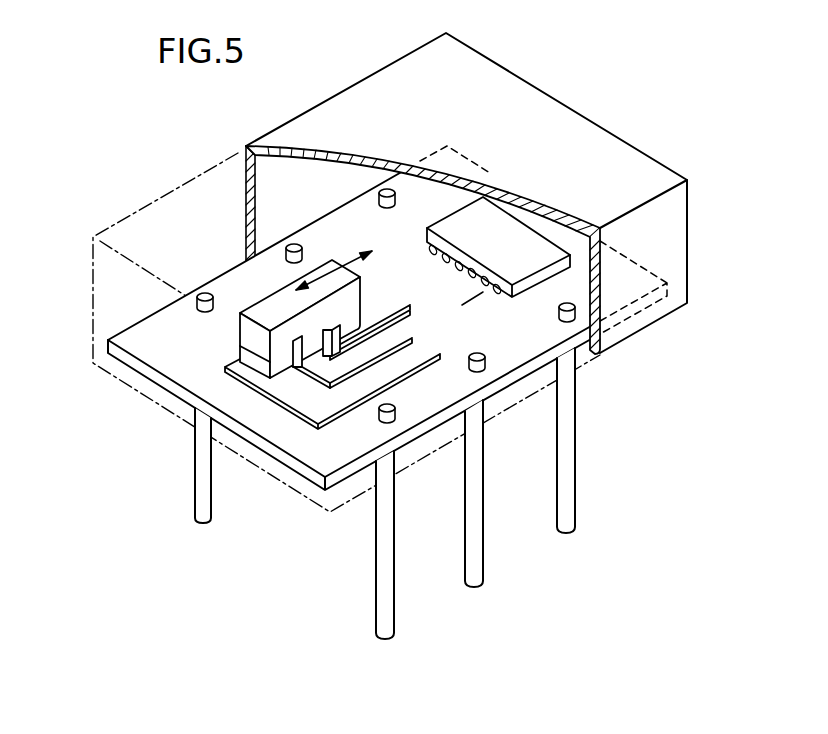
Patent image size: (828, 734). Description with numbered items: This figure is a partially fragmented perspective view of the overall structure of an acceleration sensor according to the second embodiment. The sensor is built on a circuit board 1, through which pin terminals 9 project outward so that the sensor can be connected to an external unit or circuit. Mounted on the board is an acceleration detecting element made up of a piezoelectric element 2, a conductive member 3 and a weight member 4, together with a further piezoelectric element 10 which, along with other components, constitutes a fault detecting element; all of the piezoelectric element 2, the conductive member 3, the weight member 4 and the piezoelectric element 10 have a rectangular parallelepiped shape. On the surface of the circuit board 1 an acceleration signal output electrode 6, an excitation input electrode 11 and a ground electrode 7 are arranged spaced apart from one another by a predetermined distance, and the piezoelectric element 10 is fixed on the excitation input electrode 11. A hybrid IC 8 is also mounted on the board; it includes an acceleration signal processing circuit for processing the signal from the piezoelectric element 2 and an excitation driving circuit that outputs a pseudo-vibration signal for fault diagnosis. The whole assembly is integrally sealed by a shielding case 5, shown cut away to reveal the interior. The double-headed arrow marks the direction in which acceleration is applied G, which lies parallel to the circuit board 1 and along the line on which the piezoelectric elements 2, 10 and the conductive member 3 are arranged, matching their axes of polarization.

The circuit board 1 is at (137, 338).
The piezoelectric element 2 is at (347, 330).
The conductive member 3 is at (258, 367).
The weight member 4 is at (263, 308).
The shielding case 5 is at (497, 114).
The acceleration signal output electrode 6 is at (402, 335).
The ground electrode 7 is at (297, 385).
The hybrid IC 8 is at (510, 242).
The pin terminal 9 is at (477, 555).
The piezoelectric element 10 is at (307, 357).
The excitation input electrode 11 is at (360, 358).
The direction in which acceleration is applied G is at (337, 267).